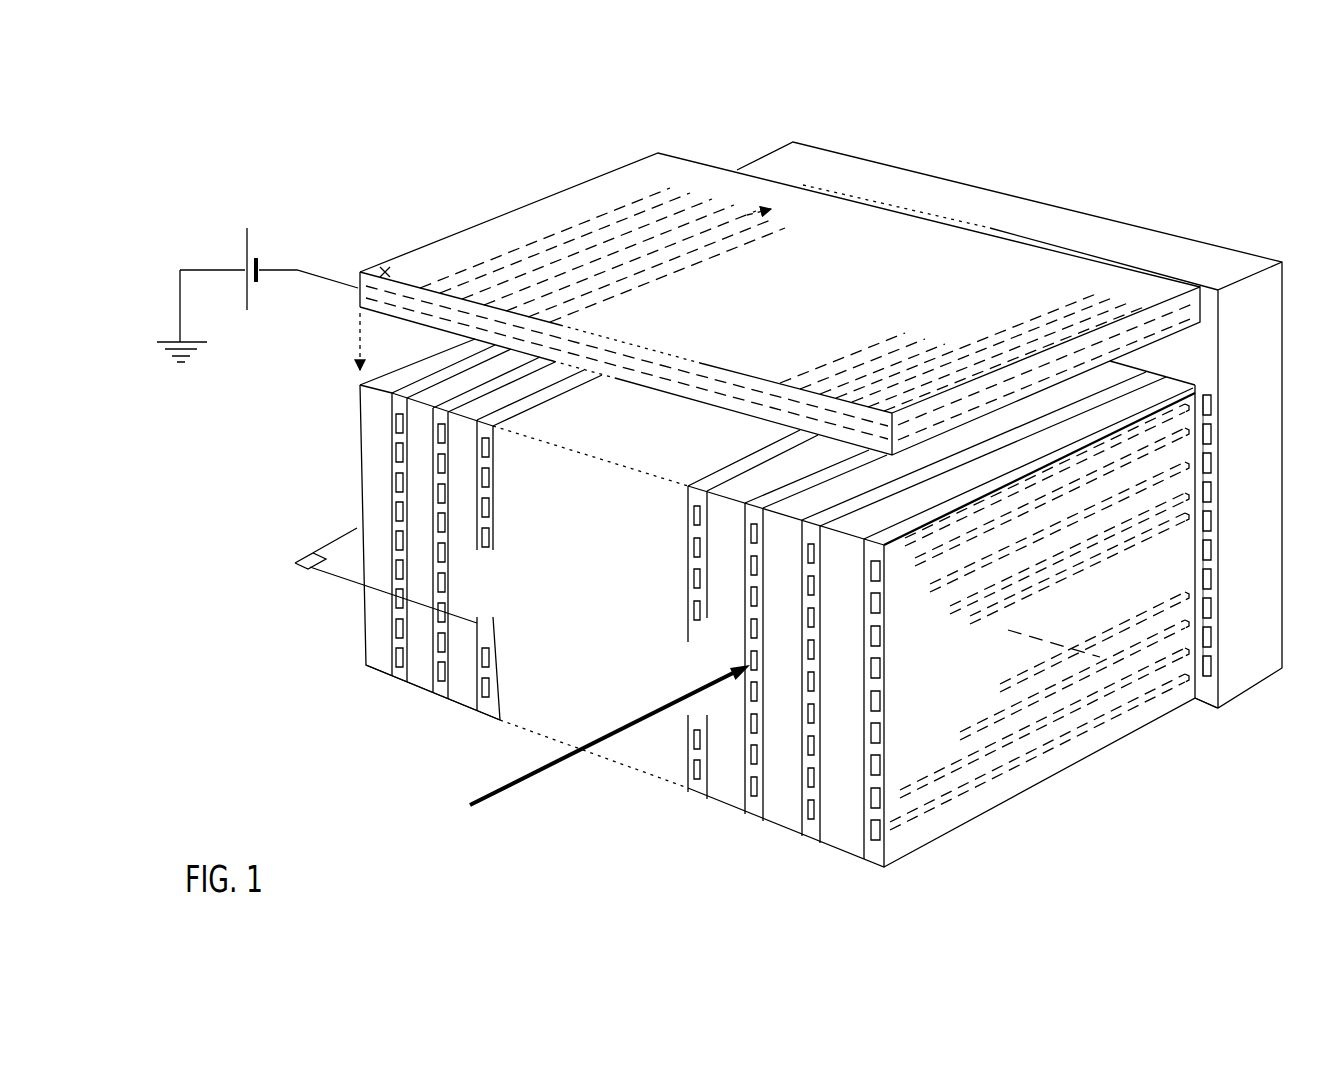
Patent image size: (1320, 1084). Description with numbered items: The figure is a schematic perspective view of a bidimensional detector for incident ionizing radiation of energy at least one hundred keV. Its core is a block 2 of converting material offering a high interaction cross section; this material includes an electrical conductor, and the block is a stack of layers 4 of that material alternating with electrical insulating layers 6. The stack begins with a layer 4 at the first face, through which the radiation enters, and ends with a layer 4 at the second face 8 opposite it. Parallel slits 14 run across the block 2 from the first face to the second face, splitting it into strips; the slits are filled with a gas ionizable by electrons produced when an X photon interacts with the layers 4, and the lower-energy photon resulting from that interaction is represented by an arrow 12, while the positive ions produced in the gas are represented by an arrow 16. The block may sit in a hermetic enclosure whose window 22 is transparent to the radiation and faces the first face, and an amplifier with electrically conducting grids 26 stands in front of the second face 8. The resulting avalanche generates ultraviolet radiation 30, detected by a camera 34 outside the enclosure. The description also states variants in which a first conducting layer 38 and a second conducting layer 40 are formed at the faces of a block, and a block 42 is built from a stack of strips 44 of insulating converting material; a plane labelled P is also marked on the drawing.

The block 2 is at (338, 638).
The layers 4 is at (463, 692).
The electrical insulating layers 6 is at (432, 688).
The second face 8 is at (660, 761).
The arrow 12 is at (376, 465).
The parallel slits 14 is at (383, 405).
The arrow 16 is at (487, 806).
The window 22 is at (441, 493).
The electrically conducting grid 26 is at (482, 198).
The ultraviolet radiation 30 is at (1118, 237).
The camera 34 is at (1210, 668).
The first conducting layer 38 is at (245, 246).
The second conducting layer 40 is at (658, 153).
The block 42 is at (658, 233).
The strips 44 is at (392, 297).
The plane P is at (313, 553).